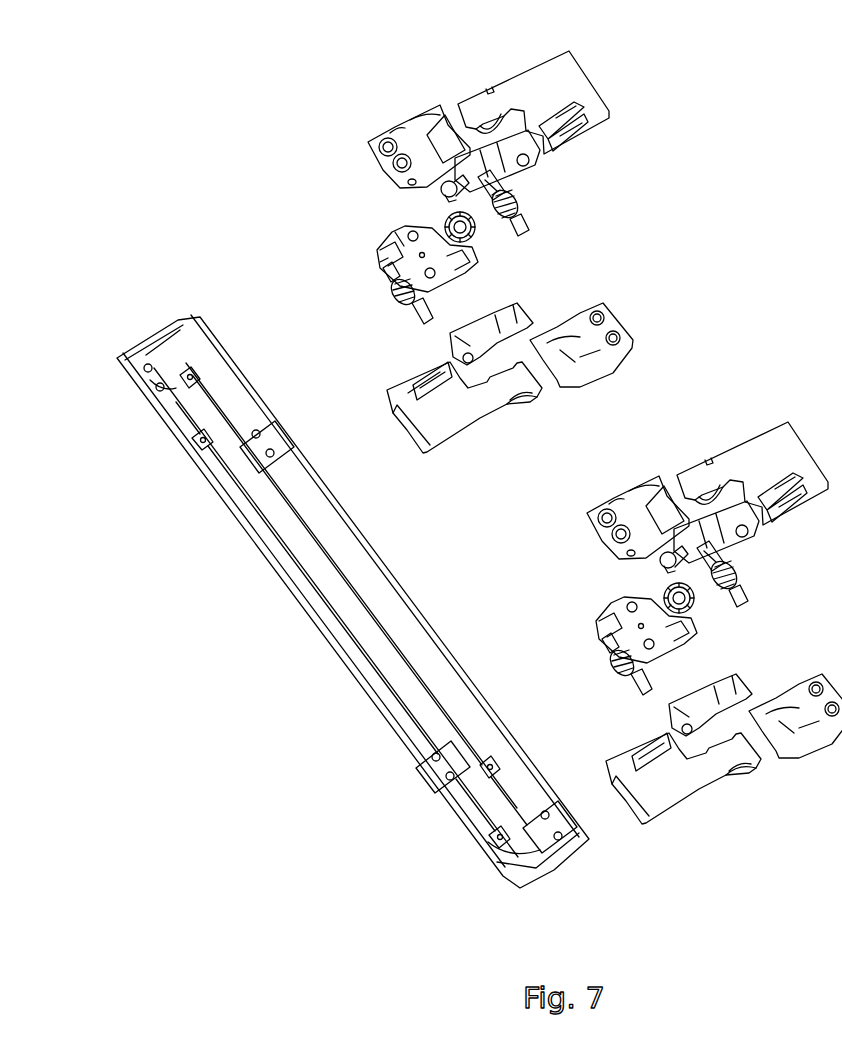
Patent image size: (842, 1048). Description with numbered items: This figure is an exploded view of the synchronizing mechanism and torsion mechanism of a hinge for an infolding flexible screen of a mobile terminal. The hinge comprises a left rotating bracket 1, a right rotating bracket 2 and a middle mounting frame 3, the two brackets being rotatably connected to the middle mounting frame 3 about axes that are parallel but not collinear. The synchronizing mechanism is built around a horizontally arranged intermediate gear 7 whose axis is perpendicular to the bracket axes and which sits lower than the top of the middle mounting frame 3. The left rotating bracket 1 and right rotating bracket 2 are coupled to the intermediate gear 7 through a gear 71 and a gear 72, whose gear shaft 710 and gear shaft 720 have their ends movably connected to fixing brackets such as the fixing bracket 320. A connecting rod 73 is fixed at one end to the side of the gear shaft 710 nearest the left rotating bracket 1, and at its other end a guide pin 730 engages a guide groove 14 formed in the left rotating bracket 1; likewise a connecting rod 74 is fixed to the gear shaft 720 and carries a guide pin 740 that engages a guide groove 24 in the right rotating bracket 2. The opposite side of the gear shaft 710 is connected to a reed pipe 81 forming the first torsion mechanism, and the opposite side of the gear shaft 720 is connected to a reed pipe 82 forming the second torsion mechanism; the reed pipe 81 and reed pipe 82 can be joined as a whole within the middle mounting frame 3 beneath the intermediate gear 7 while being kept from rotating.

The left rotating bracket 1 is at (450, 437).
The right rotating bracket 2 is at (540, 92).
The middle mounting frame 3 is at (148, 406).
The intermediate gear 7 is at (473, 240).
The guide groove 14 is at (413, 399).
The guide groove 24 is at (530, 160).
The gear 71 is at (392, 294).
The gear 72 is at (513, 210).
The connecting rod 73 is at (513, 317).
The connecting rod 74 is at (493, 170).
The reed pipe 81 is at (378, 242).
The reed pipe 82 is at (415, 222).
The fixing bracket 320 is at (368, 143).
The gear shaft 710 is at (377, 270).
The gear shaft 720 is at (513, 193).
The guide pin 730 is at (390, 387).
The guide pin 740 is at (483, 172).